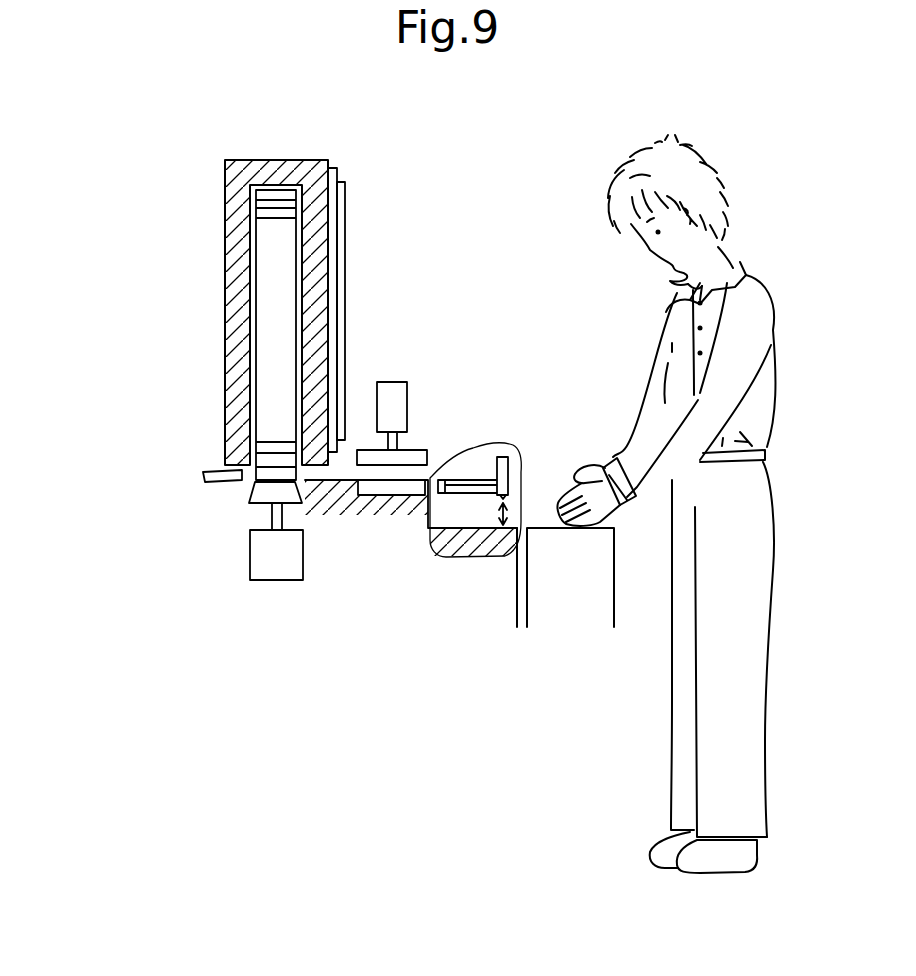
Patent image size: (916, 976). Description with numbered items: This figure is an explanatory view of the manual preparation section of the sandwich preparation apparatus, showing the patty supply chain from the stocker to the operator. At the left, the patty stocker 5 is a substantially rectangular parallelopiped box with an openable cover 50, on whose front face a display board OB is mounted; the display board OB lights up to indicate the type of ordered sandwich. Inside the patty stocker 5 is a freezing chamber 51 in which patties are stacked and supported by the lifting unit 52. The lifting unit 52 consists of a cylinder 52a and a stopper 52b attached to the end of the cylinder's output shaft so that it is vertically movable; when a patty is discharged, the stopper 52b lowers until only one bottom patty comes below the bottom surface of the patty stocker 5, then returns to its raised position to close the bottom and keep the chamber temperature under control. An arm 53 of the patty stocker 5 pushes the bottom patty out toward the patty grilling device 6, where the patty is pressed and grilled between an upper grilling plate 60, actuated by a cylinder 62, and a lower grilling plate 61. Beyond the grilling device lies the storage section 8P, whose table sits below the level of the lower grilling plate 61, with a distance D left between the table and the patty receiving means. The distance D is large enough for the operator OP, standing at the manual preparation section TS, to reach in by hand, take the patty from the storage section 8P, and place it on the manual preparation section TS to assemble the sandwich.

The patty stocker 5 is at (209, 175).
The openable cover 50 is at (336, 170).
The display board OB is at (358, 195).
The freezing chamber 51 is at (252, 247).
The arm 53 is at (205, 473).
The lifting unit 52 is at (178, 535).
The cylinder 52a is at (260, 563).
The stopper 52b is at (253, 505).
The patty grilling device 6 is at (420, 359).
The upper grilling plate 60 is at (407, 480).
The cylinder 62 is at (391, 382).
The lower grilling plate 61 is at (440, 470).
The storage section 8P is at (510, 425).
The distance D is at (500, 512).
The manual preparation section TS is at (547, 525).
The operator OP is at (790, 293).